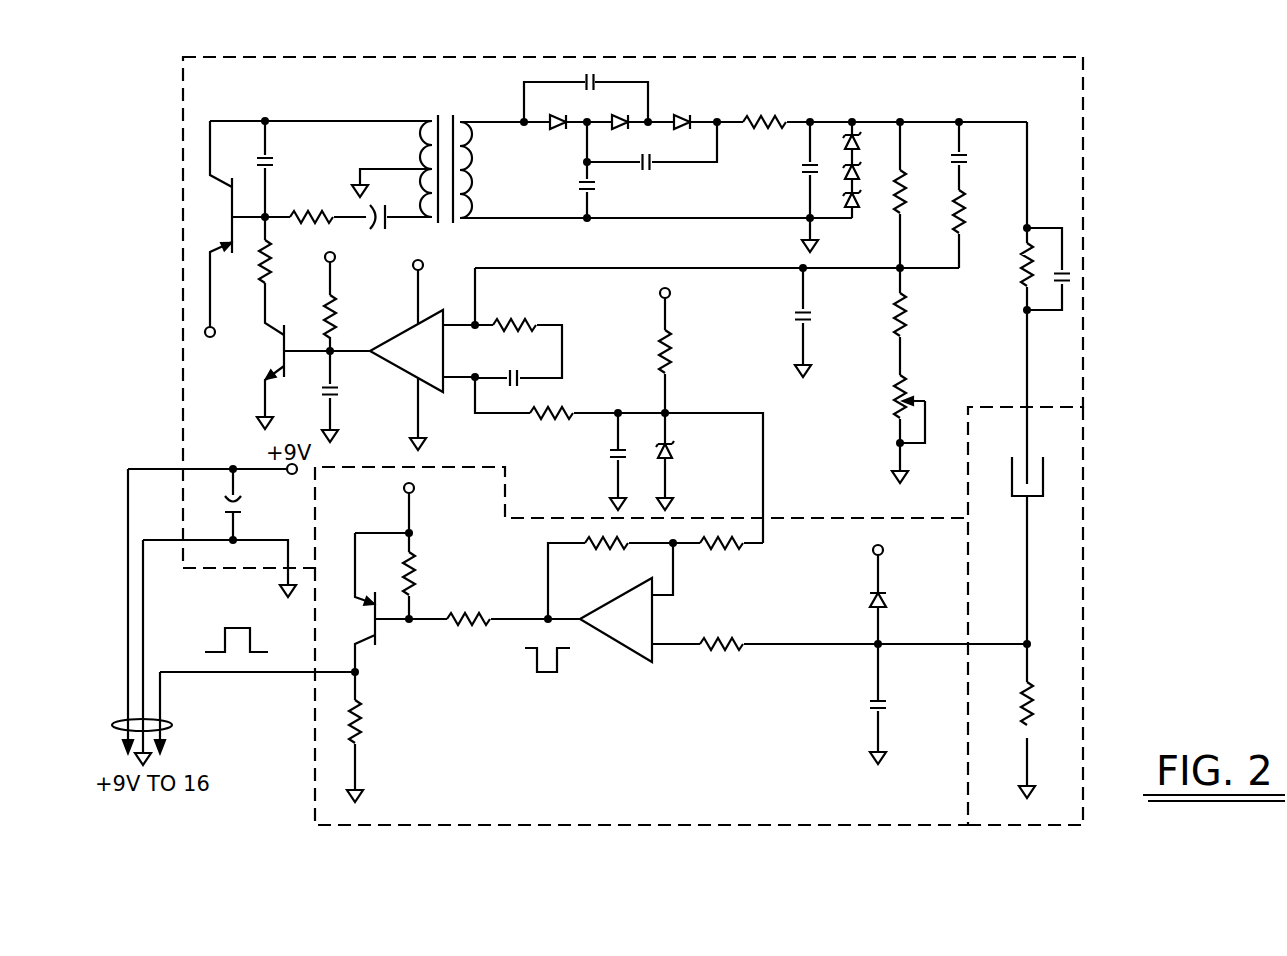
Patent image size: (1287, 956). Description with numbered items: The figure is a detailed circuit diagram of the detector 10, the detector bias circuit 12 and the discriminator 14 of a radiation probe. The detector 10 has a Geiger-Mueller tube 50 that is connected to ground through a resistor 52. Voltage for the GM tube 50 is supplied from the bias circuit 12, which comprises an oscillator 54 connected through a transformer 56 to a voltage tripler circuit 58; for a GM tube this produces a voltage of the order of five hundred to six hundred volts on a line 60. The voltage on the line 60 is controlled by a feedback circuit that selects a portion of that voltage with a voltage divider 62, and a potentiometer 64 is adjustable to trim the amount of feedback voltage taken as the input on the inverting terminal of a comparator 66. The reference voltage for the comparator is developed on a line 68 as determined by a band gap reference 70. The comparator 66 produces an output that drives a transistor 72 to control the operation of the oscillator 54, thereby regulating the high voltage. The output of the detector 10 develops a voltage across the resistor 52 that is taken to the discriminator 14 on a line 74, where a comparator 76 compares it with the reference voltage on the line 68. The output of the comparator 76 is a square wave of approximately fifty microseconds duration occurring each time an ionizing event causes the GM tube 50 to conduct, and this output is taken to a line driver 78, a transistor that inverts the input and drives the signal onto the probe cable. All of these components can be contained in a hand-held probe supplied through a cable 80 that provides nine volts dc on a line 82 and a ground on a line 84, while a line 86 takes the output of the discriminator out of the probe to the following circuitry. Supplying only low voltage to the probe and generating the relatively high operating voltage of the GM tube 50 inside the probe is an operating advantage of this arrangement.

The detector 10 is at (1083, 561).
The detector bias circuit 12 is at (1083, 203).
The discriminator 14 is at (310, 728).
The Geiger-Mueller tube 50 is at (1015, 499).
The resistor 52 is at (1016, 724).
The oscillator 54 is at (336, 176).
The transformer 56 is at (447, 118).
The voltage tripler circuit 58 is at (709, 201).
The line 60 is at (928, 121).
The voltage divider 62 is at (894, 257).
The potentiometer 64 is at (908, 390).
The comparator 66 is at (403, 370).
The line 68 is at (688, 412).
The band gap reference 70 is at (680, 462).
The transistor 72 is at (291, 368).
The line 74 is at (953, 641).
The comparator 76 is at (612, 640).
The line driver 78 is at (380, 630).
The cable 80 is at (172, 727).
The line 82 is at (125, 672).
The line 84 is at (146, 656).
The line 86 is at (165, 690).